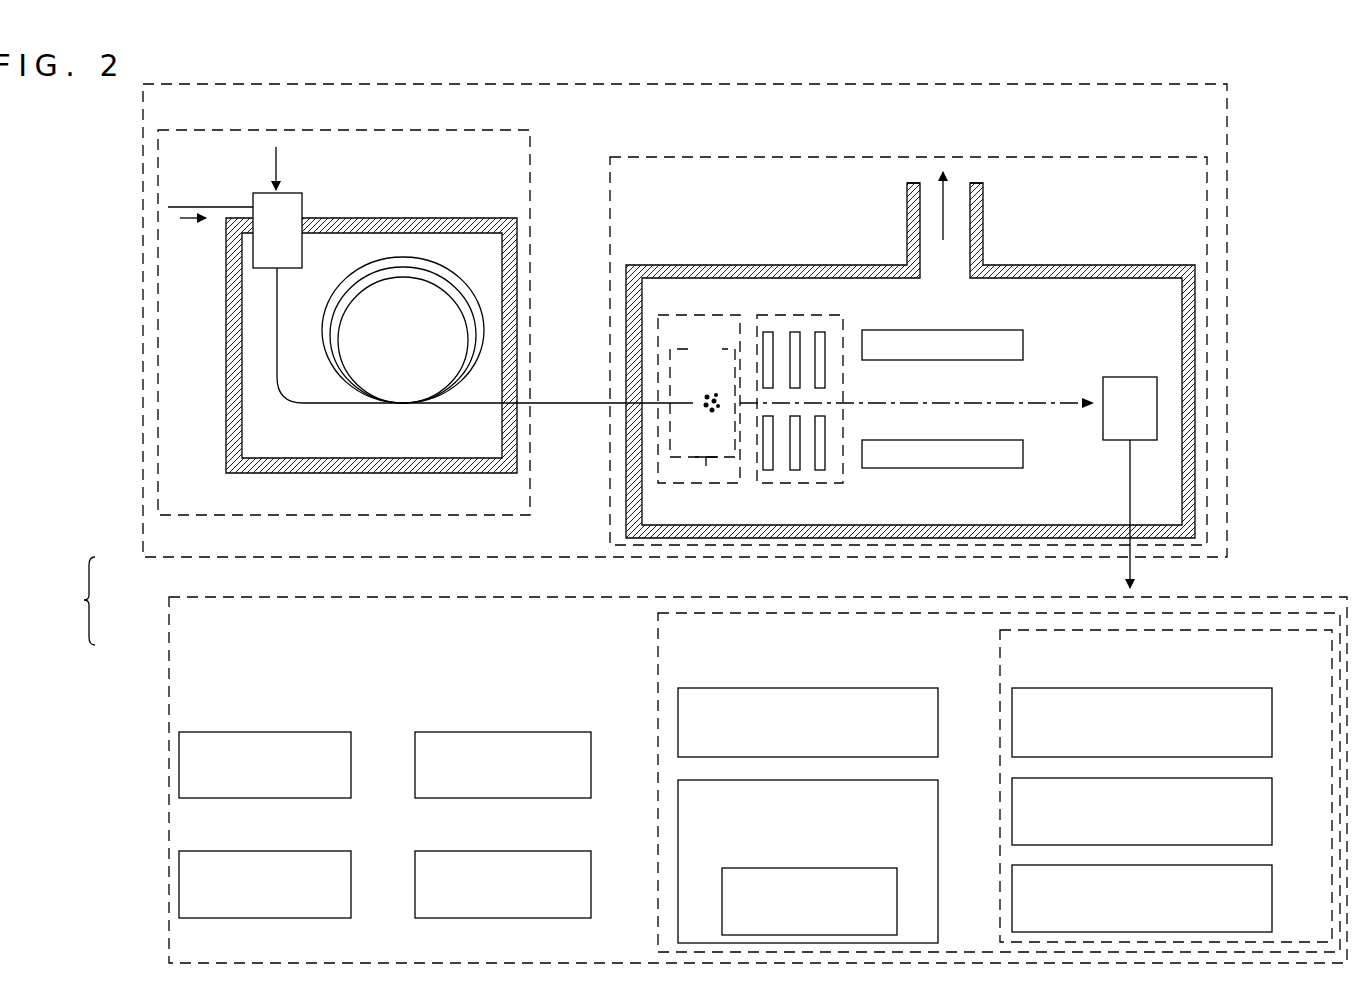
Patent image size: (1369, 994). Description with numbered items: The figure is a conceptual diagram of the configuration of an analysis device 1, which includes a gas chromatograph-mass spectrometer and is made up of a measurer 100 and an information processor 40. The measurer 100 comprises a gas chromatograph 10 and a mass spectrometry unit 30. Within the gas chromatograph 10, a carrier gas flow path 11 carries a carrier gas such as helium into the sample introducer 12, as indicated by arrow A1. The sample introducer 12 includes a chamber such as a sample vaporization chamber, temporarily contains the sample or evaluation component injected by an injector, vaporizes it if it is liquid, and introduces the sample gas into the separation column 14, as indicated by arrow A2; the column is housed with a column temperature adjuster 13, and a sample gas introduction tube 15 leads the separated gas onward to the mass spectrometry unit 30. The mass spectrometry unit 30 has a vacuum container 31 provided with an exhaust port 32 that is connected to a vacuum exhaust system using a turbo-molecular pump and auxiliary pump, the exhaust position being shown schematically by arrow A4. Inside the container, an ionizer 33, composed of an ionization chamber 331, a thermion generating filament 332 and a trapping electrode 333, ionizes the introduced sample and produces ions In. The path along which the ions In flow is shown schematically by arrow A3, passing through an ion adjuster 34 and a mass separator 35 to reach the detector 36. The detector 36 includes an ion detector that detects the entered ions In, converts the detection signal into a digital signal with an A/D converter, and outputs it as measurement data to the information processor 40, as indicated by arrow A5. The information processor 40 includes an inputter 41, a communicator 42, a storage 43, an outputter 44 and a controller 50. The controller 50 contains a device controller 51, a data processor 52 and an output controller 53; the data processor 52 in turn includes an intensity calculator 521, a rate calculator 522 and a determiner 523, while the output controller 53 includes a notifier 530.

The analysis device 1 is at (77, 601).
The measurer 100 is at (141, 538).
The gas chromatograph 10 is at (530, 492).
The carrier gas flow path 11 is at (222, 207).
The sample introducer 12 is at (289, 192).
The column temperature adjuster 13 is at (376, 226).
The separation column 14 is at (412, 258).
The sample gas introduction tube 15 is at (475, 404).
The mass spectrometry unit 30 is at (609, 196).
The vacuum container 31 is at (703, 266).
The exhaust port 32 is at (906, 205).
The ionizer 33 is at (734, 316).
The ionization chamber 331 is at (671, 376).
The thermion generating filament 332 is at (695, 344).
The trapping electrode 333 is at (706, 466).
The ion adjuster 34 is at (783, 318).
The mass separator 35 is at (868, 330).
The detector 36 is at (1122, 376).
The information processor 40 is at (168, 638).
The inputter 41 is at (315, 732).
The communicator 42 is at (315, 851).
The storage 43 is at (553, 732).
The outputter 44 is at (553, 851).
The controller 50 is at (657, 650).
The device controller 51 is at (905, 688).
The data processor 52 is at (999, 648).
The intensity calculator 521 is at (1248, 688).
The rate calculator 522 is at (1248, 778).
The determiner 523 is at (1248, 865).
The output controller 53 is at (905, 780).
The notifier 530 is at (855, 868).
The arrow A1 is at (206, 224).
The arrow A2 is at (272, 172).
The arrow A3 is at (1048, 398).
The arrow A4 is at (946, 217).
The arrow A5 is at (1136, 577).
The ions In is at (702, 397).